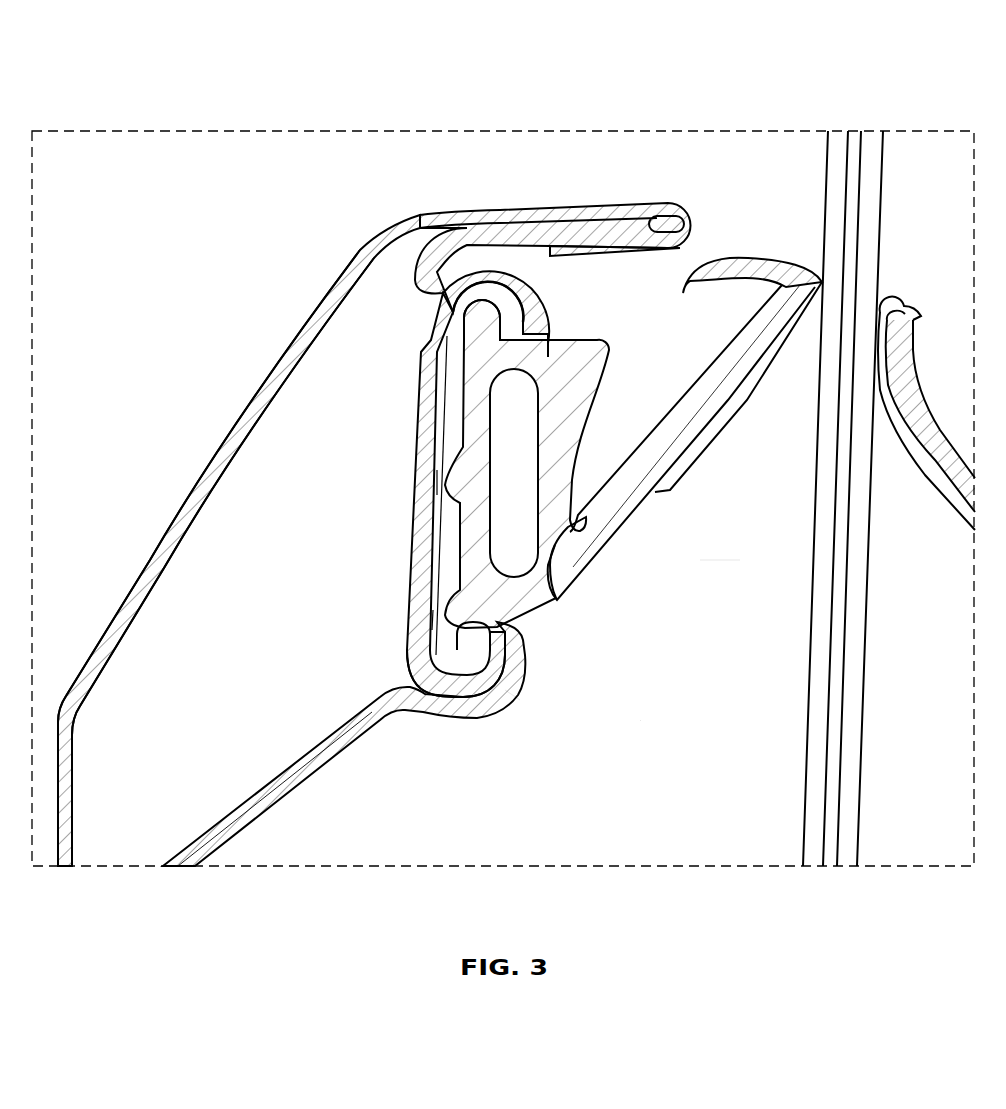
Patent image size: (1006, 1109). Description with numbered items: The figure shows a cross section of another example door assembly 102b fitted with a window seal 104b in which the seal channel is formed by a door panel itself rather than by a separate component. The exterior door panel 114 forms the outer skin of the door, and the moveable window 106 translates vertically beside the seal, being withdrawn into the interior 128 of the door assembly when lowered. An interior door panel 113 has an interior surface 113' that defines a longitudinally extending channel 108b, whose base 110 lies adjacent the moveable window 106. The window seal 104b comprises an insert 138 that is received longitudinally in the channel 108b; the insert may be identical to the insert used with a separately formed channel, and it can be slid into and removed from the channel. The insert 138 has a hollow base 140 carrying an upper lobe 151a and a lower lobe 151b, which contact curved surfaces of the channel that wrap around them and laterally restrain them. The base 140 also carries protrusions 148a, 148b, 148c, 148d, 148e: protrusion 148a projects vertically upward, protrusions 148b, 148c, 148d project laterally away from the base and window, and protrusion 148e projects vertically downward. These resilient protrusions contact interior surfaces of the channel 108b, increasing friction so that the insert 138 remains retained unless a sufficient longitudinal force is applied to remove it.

The door assembly 102b is at (280, 242).
The window seal 104b is at (642, 716).
The moveable window 106 is at (858, 695).
The channel 108b is at (542, 692).
The base 110 is at (423, 378).
The interior door panel 113 is at (344, 744).
The interior surface 113' is at (529, 726).
The exterior door panel 114 is at (185, 503).
The interior 128 is at (717, 567).
The insert 138 is at (640, 308).
The base 140 is at (549, 352).
The protrusion 148a is at (574, 203).
The protrusion 148b is at (455, 338).
The protrusion 148c is at (460, 488).
The protrusion 148d is at (451, 625).
The protrusion 148e is at (450, 672).
The upper lobe 151a is at (482, 313).
The lower lobe 151b is at (480, 645).